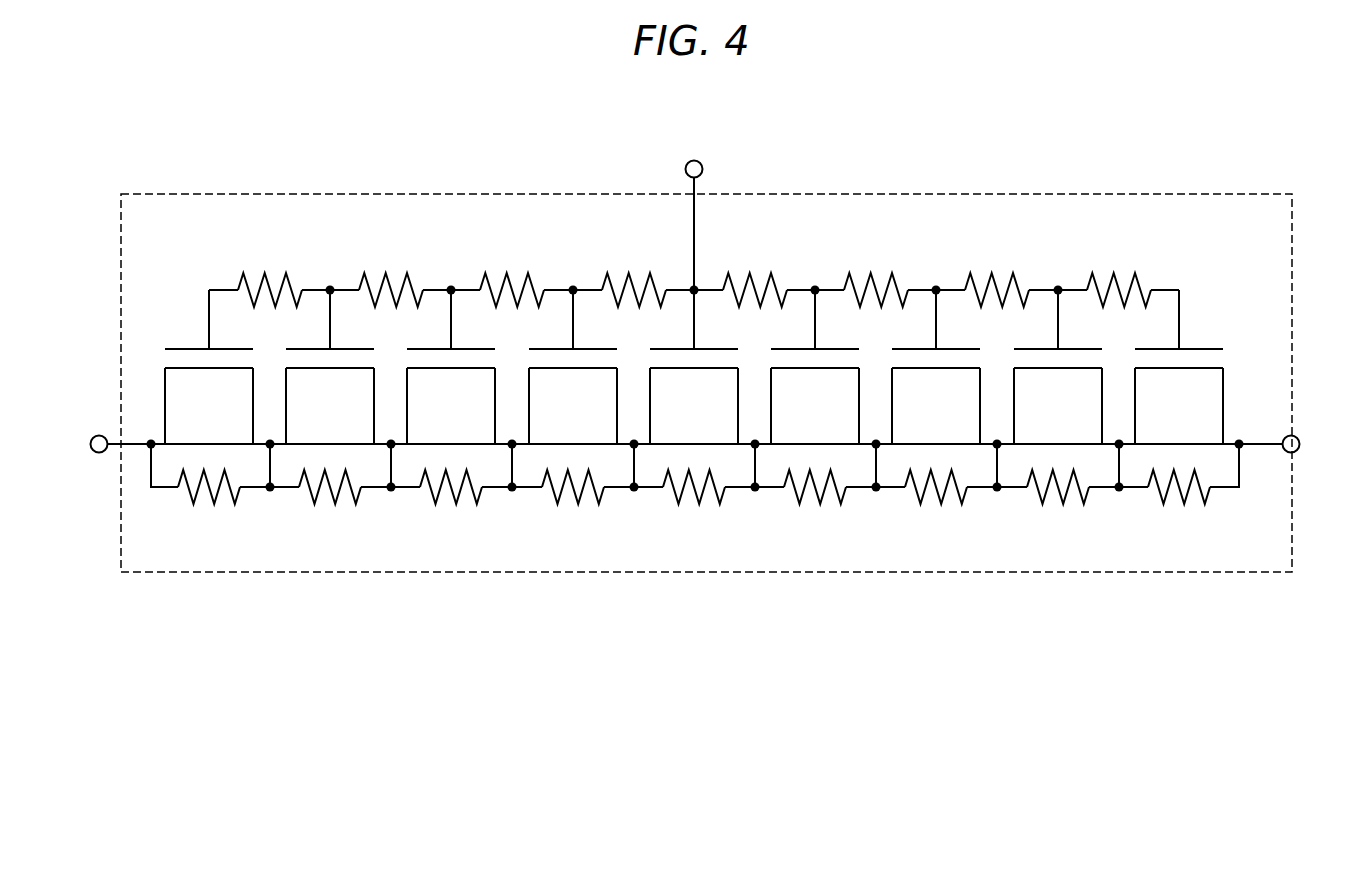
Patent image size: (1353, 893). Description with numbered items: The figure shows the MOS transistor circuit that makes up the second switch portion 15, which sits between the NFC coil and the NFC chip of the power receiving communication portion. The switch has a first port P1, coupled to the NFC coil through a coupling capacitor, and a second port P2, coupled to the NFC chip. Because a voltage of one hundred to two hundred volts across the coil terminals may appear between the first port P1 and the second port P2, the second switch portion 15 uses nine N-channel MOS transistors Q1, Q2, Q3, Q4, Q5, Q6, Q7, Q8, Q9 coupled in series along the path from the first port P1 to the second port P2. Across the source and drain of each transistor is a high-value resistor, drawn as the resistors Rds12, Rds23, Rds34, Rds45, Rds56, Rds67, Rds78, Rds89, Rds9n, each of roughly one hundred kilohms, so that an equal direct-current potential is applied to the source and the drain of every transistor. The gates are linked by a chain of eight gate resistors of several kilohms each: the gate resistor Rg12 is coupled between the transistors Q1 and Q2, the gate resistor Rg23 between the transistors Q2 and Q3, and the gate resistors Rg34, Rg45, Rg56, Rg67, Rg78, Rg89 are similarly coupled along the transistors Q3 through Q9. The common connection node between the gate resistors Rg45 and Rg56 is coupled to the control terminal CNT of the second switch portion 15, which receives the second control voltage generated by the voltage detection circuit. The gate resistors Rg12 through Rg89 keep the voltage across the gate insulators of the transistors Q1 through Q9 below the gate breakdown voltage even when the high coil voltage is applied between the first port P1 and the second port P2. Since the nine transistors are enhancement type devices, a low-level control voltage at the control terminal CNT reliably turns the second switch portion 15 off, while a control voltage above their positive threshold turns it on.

The second switch portion 15 is at (176, 193).
The control terminal CNT is at (698, 160).
The first port P1 is at (97, 453).
The second port P2 is at (1297, 451).
The N-channel MOS transistor Q1 is at (209, 396).
The N-channel MOS transistor Q2 is at (330, 396).
The N-channel MOS transistor Q3 is at (451, 396).
The N-channel MOS transistor Q4 is at (573, 396).
The N-channel MOS transistor Q5 is at (694, 396).
The N-channel MOS transistor Q6 is at (815, 396).
The N-channel MOS transistor Q7 is at (936, 396).
The N-channel MOS transistor Q8 is at (1058, 396).
The N-channel MOS transistor Q9 is at (1179, 396).
The gate resistor Rg12 is at (267, 269).
The gate resistor Rg23 is at (389, 269).
The gate resistor Rg34 is at (511, 269).
The gate resistor Rg45 is at (634, 269).
The gate resistor Rg56 is at (755, 269).
The gate resistor Rg67 is at (876, 269).
The gate resistor Rg78 is at (996, 269).
The gate resistor Rg89 is at (1117, 269).
The resistor Rds12 is at (207, 507).
The resistor Rds23 is at (330, 507).
The resistor Rds34 is at (453, 507).
The resistor Rds45 is at (575, 507).
The resistor Rds56 is at (694, 507).
The resistor Rds67 is at (817, 507).
The resistor Rds78 is at (936, 507).
The resistor Rds89 is at (1058, 507).
The resistor Rds9n is at (1179, 507).